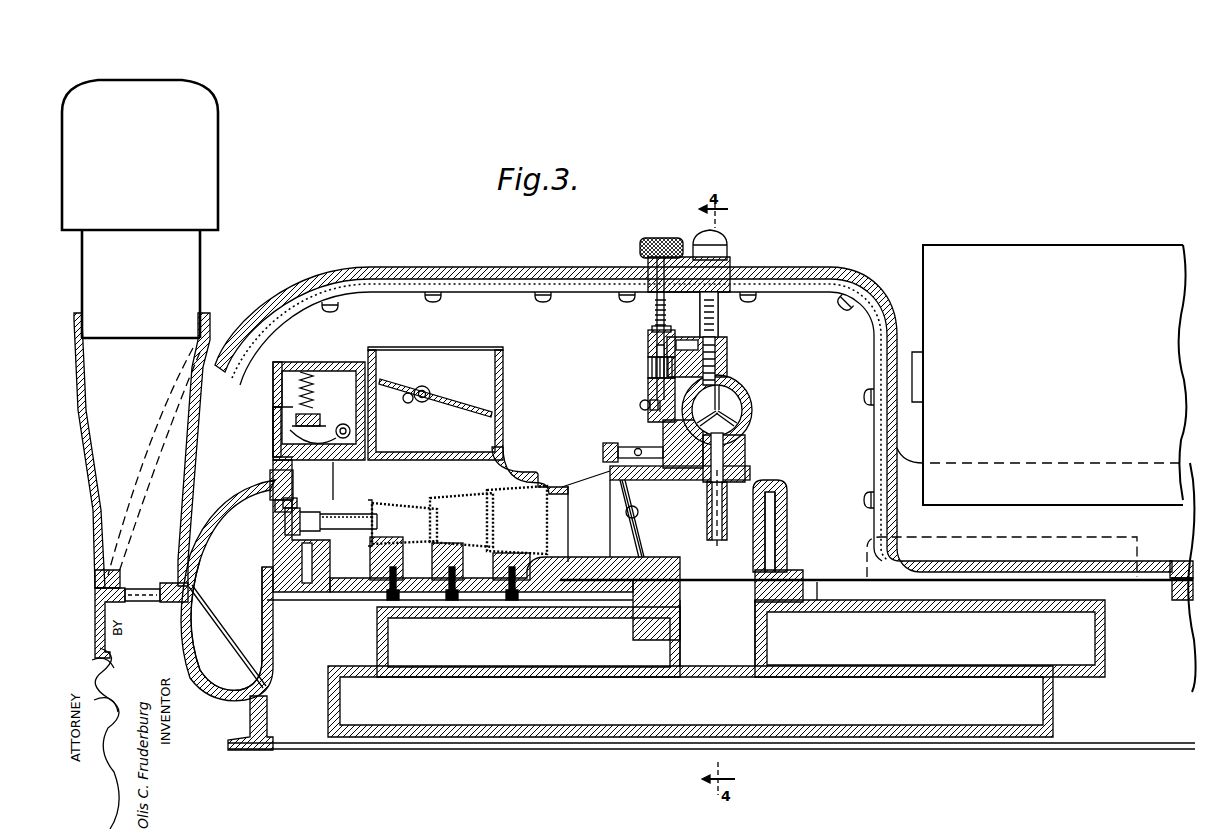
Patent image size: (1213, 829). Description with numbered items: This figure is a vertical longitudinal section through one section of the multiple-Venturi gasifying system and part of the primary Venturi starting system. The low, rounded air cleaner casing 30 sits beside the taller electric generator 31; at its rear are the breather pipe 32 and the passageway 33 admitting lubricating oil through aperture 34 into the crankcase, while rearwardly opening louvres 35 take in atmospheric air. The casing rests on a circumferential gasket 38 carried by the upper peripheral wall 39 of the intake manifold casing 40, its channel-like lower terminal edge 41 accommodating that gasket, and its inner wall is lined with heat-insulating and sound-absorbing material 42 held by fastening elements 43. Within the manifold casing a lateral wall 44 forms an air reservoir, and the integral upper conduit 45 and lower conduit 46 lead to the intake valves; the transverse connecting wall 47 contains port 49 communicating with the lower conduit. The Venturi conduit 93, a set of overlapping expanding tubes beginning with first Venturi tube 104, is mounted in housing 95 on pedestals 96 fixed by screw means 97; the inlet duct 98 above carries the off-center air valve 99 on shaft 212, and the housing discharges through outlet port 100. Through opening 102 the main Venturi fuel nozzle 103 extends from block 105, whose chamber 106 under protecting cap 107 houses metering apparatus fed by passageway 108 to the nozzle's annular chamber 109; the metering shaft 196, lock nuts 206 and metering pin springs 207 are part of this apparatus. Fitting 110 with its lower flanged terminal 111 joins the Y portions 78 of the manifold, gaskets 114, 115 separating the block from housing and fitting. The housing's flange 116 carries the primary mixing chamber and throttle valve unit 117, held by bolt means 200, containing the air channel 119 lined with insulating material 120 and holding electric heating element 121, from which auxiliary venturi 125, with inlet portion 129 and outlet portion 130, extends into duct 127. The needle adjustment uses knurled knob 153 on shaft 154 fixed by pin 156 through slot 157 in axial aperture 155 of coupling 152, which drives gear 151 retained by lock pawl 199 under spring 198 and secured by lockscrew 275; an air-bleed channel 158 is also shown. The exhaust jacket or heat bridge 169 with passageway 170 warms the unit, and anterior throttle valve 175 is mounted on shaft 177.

The air cleaner casing 30 is at (846, 282).
The electric generator 31 is at (933, 293).
The breather pipe 32 is at (190, 266).
The passageway 33 is at (143, 588).
The aperture 34 is at (147, 601).
The louvres 35 is at (1017, 548).
The circumferential gasket 38 is at (95, 578).
The upper peripheral wall 39 is at (1153, 587).
The intake manifold casing 40 is at (1112, 753).
The lower peripheral terminal edge 41 is at (1180, 565).
The heat-insulating and sound-absorbing material 42 is at (873, 340).
The fastening elements 43 is at (545, 303).
The lateral wall 44 is at (827, 580).
The upper conduit 45 is at (665, 660).
The lower conduit 46 is at (470, 712).
The connecting wall or flange 47 is at (635, 592).
The port 49 is at (715, 597).
The Y portions 78 is at (226, 625).
The Venturi conduit 93 is at (414, 501).
The housing 95 is at (524, 462).
The pedestals 96 is at (435, 560).
The screw means 97 is at (386, 598).
The inlet duct 98 is at (505, 356).
The valve 99 is at (447, 400).
The outlet port 100 is at (610, 527).
The opening 102 is at (333, 502).
The main Venturi fuel nozzle 103 is at (345, 550).
The first Venturi tube 104 is at (394, 503).
The block 105 is at (270, 474).
The chamber 106 is at (270, 438).
The protecting cap 107 is at (277, 379).
The passageway 108 is at (305, 594).
The annular chamber 109 is at (301, 498).
The fitting 110 is at (232, 520).
The lower flanged terminal 111 is at (228, 642).
The gasket 114 is at (336, 473).
The gasket 115 is at (277, 506).
The flange 116 is at (566, 580).
The primary mixing chamber and throttle valve unit 117 is at (753, 467).
The air channel 119 is at (727, 397).
The insulating material 120 is at (753, 403).
The electric heating element 121 is at (757, 408).
The auxiliary venturi 125 is at (725, 513).
The duct 127 is at (742, 540).
The inlet portion 129 is at (742, 437).
The outlet portion 130 is at (717, 540).
The gear 151 is at (648, 370).
The coupling 152 is at (648, 334).
The knurled knob 153 is at (657, 240).
The shaft 154 is at (640, 258).
The axial aperture 155 is at (657, 352).
The pin 156 is at (651, 326).
The slot 157 is at (668, 323).
The transverse air-bleed channel 158 is at (668, 430).
The exhaust jacket or heat bridge 169 is at (787, 528).
The passageway 170 is at (772, 502).
The anterior throttle valve 175 is at (640, 543).
The shaft 177 is at (638, 512).
The metering shaft 196 is at (352, 432).
The spring 198 is at (717, 360).
The lock pawl 199 is at (685, 346).
The bolt means 200 is at (725, 250).
The lock nuts 206 is at (315, 424).
The metering pin springs 207 is at (314, 372).
The shaft 212 is at (424, 386).
The lockscrew 275 is at (641, 402).